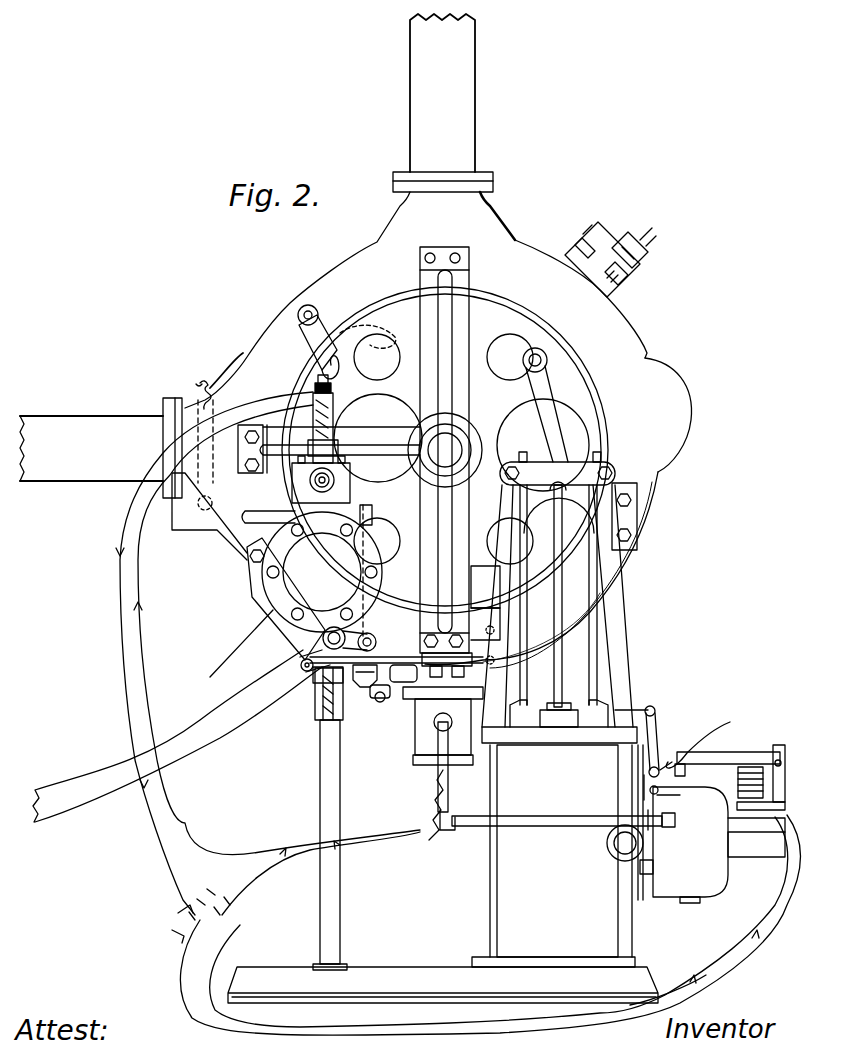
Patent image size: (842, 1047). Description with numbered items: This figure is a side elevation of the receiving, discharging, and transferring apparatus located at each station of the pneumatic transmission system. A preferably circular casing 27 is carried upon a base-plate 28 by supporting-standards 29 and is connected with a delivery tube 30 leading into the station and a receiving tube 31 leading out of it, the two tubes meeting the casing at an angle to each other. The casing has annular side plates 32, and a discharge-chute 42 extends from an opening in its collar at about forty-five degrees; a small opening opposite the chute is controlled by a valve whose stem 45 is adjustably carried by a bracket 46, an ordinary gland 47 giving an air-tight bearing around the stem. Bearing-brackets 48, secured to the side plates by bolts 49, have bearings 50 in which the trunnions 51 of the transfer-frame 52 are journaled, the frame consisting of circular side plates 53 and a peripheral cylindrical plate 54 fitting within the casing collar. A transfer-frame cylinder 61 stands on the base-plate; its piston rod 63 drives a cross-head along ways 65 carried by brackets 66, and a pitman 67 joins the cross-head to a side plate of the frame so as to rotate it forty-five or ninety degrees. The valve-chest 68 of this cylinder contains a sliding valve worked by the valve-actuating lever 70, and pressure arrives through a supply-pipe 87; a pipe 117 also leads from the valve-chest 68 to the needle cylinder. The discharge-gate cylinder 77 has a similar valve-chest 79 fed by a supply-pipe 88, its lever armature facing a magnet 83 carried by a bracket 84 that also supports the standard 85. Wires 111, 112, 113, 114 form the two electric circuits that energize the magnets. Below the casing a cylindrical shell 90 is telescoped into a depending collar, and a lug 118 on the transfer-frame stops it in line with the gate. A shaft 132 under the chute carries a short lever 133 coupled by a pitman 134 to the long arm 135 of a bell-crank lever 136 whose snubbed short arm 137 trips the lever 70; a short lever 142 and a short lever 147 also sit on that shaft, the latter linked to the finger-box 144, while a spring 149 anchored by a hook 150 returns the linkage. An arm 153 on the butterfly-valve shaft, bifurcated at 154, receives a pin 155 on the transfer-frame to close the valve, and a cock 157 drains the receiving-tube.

The casing 27 is at (637, 340).
The base-plate 28 is at (443, 985).
The supporting-standards 29 is at (319, 776).
The delivery tube 30 is at (476, 86).
The receiving tube 31 is at (98, 430).
The annular side plates 32 is at (654, 415).
The discharge-chute 42 is at (240, 658).
The valve-stem 45 is at (646, 250).
The bracket 46 is at (600, 255).
The gland 47 is at (625, 285).
The bearing-brackets 48 is at (470, 335).
The bolts 49 is at (454, 254).
The bearings 50 is at (470, 432).
The trunnions 51 is at (445, 450).
The transfer-frame 52 is at (464, 456).
The circular side plates 53 is at (568, 380).
The peripheral cylindrical plate 54 is at (562, 348).
The transfer-frame cylinder 61 is at (557, 856).
The piston rod 63 is at (563, 683).
The ways 65 is at (602, 606).
The brackets 66 is at (628, 660).
The pitman 67 is at (545, 422).
The valve-chest 68 is at (684, 845).
The valve-actuating lever 70 is at (728, 760).
The discharge-gate cylinder 77 is at (314, 586).
The valve-chest 79 is at (294, 492).
The magnet 83 is at (334, 420).
The bracket 84 is at (338, 441).
The standard 85 is at (330, 392).
The supply-pipe 87 is at (778, 852).
The supply-pipe 88 is at (310, 440).
The cylindrical shell 90 is at (424, 720).
The wire 111 is at (736, 978).
The wire 112 is at (744, 982).
The wire 113 is at (145, 606).
The wire 114 is at (122, 590).
The pipe 117 is at (557, 838).
The lug 118 is at (486, 615).
The shaft 132 is at (377, 646).
The short lever 133 is at (300, 668).
The pitman 134 is at (645, 706).
The long arm 135 is at (658, 718).
The bell-crank lever 136 is at (660, 770).
The short arm 137 is at (711, 738).
The short lever 142 is at (372, 640).
The finger-box 144 is at (373, 522).
The short lever 147 is at (292, 668).
The spring 149 is at (198, 390).
The hook 150 is at (228, 372).
The arm 153 is at (326, 340).
The bifurcated end 154 is at (318, 380).
The pin 155 is at (375, 345).
The cock 157 is at (382, 700).